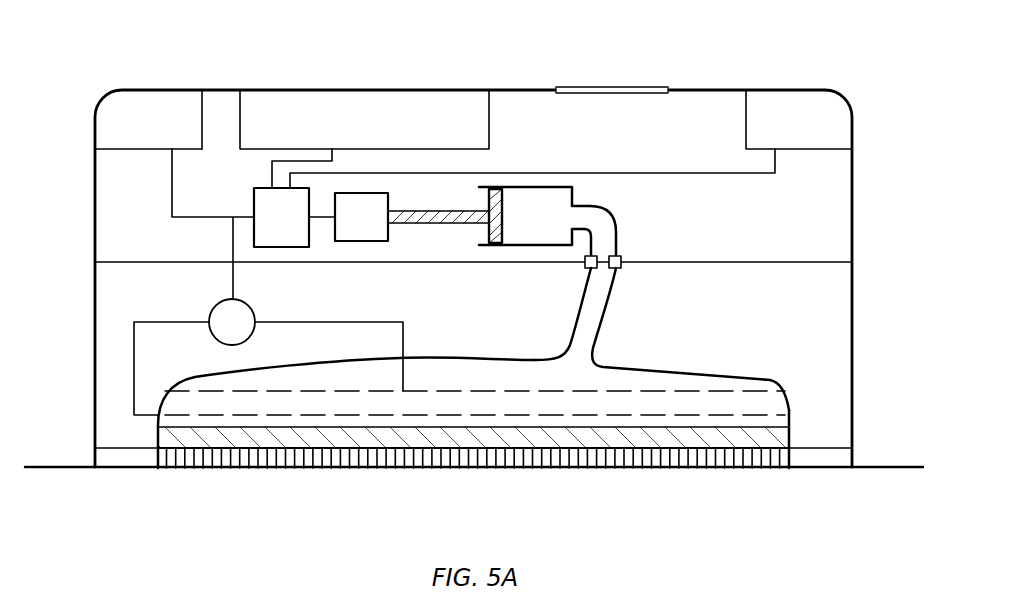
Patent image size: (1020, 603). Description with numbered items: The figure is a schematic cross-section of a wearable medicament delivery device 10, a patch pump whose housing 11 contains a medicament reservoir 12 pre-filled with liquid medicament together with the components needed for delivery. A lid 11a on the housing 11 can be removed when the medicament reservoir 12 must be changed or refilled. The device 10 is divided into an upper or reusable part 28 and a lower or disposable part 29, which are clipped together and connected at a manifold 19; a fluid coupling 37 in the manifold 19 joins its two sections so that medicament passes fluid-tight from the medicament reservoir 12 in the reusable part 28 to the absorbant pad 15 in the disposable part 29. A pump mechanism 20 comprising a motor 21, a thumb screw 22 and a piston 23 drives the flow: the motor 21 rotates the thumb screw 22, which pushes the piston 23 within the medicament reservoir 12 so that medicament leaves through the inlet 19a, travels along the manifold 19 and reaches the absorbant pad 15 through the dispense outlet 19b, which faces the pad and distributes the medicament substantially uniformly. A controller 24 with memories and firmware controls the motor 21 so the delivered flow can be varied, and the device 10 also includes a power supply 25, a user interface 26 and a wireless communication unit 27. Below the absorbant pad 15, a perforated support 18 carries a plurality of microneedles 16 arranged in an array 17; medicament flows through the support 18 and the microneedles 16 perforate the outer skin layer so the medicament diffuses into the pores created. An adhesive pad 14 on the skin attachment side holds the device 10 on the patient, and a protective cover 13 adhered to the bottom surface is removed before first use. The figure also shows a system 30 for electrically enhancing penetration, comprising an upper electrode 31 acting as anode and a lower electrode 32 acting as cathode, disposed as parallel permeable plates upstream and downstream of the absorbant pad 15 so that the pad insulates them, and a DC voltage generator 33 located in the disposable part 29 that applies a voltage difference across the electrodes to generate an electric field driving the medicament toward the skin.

The medicament delivery device 10 is at (96, 58).
The housing 11 is at (93, 285).
The lid 11a is at (610, 86).
The medicament reservoir 12 is at (536, 185).
The protective cover 13 is at (896, 470).
The adhesive pad 14 is at (128, 460).
The absorbant pad 15 is at (778, 437).
The microneedles 16 is at (397, 470).
The array 17 is at (326, 472).
The support 18 is at (690, 452).
The manifold 19 is at (599, 305).
The inlet 19a is at (588, 212).
The dispense outlet 19b is at (778, 405).
The pump mechanism 20 is at (460, 240).
The motor 21 is at (362, 248).
The thumb screw 22 is at (412, 224).
The piston 23 is at (494, 244).
The controller 24 is at (260, 196).
The power supply 25 is at (165, 103).
The user interface 26 is at (362, 103).
The wireless communication unit 27 is at (780, 103).
The reusable part 28 is at (93, 175).
The disposable part 29 is at (93, 380).
The system for electrically enhancing penetration 30 is at (123, 337).
The upper electrode 31 is at (470, 385).
The lower electrode 32 is at (310, 412).
The DC voltage generator 33 is at (214, 327).
The fluid coupling 37 is at (624, 254).